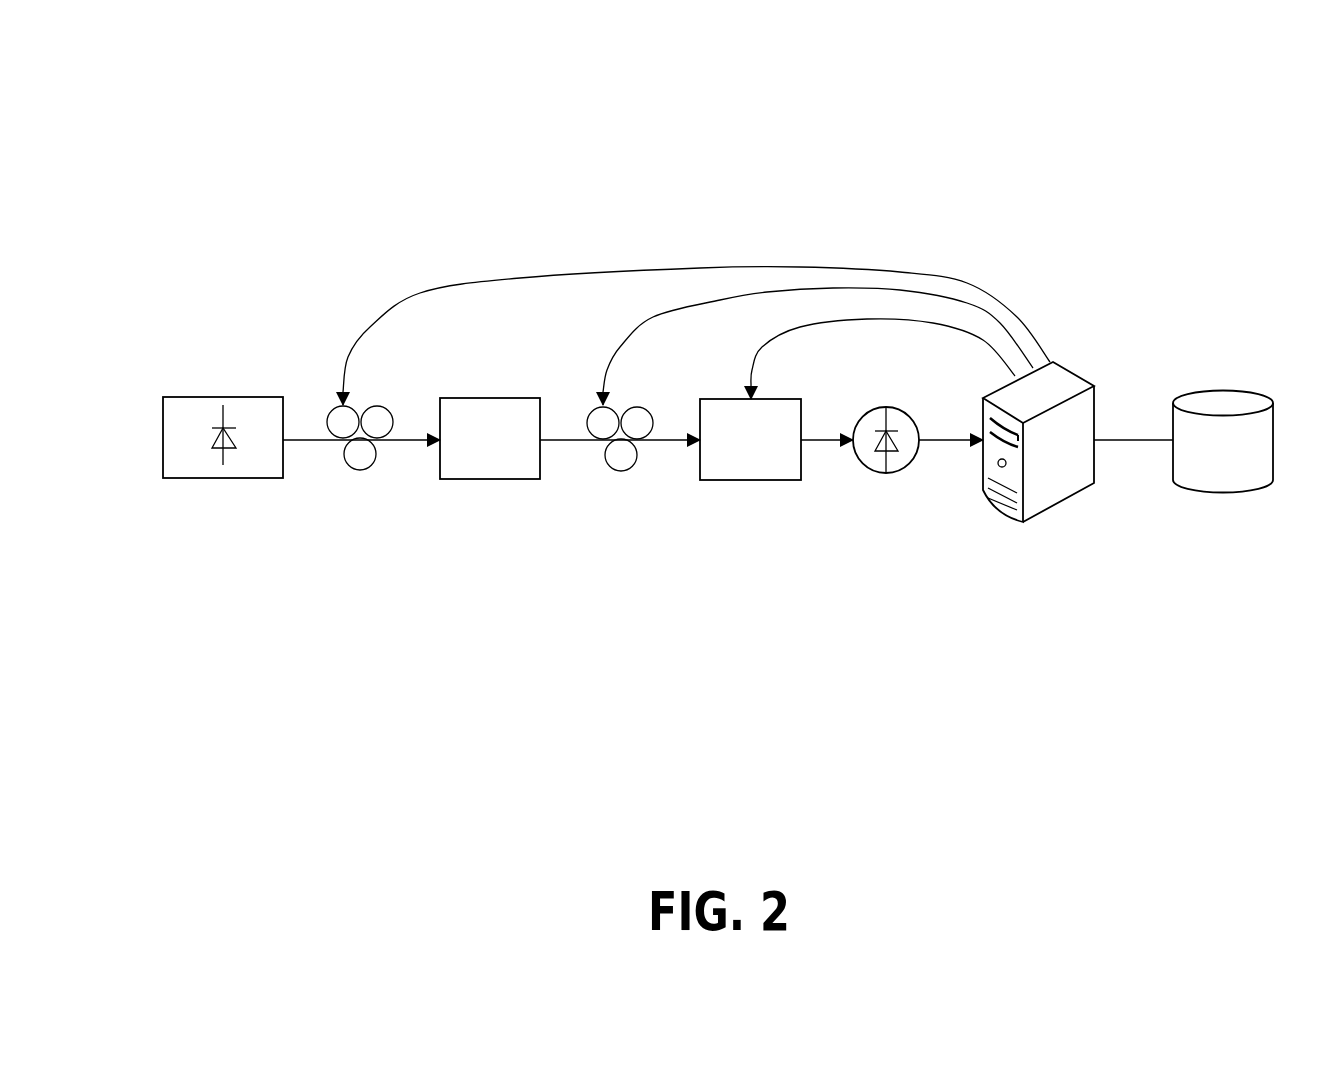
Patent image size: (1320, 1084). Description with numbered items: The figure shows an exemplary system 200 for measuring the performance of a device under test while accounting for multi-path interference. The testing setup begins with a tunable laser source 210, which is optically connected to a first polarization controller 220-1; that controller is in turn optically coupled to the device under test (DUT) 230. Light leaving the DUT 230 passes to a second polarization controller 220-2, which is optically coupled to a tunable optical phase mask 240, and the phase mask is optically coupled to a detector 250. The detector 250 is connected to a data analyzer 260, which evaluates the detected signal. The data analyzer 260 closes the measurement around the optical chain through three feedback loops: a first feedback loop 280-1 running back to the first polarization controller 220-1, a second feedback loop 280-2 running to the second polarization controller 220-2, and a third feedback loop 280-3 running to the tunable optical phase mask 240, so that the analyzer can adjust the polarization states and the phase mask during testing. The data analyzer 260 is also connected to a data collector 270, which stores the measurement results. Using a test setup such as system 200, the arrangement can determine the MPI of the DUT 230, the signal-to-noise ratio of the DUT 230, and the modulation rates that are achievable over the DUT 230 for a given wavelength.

The system 200 is at (1225, 127).
The tunable laser source 210 is at (223, 503).
The polarization controller 220-1 is at (368, 478).
The second polarization controller 220-2 is at (623, 473).
The device under test 230 is at (490, 489).
The tunable optical phase mask 240 is at (750, 502).
The detector 250 is at (890, 483).
The data analyzer 260 is at (1038, 491).
The data collector 270 is at (1223, 491).
The feedback loop 280-1 is at (687, 268).
The feedback loop 280-2 is at (803, 290).
The feedback loop 280-3 is at (973, 333).